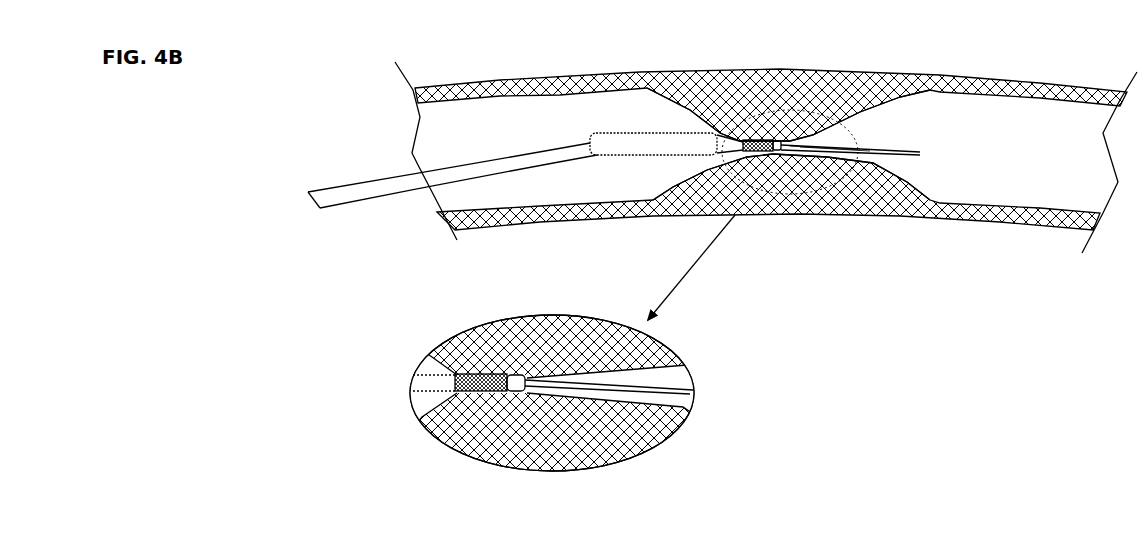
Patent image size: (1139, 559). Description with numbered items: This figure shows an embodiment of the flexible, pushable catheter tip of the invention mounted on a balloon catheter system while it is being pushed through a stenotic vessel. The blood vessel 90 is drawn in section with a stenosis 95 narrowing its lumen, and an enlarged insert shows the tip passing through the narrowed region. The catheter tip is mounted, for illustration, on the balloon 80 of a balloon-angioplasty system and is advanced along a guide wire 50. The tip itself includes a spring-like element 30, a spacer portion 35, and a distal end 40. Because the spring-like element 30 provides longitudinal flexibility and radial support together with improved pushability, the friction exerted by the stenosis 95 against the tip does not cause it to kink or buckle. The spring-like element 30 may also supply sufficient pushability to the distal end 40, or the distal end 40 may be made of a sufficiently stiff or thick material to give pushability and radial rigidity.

The spring-like element 30 is at (760, 95).
The spacer portion 35 is at (726, 100).
The distal end 40 is at (798, 207).
The guide wire 50 is at (890, 175).
The balloon 80 is at (642, 142).
The blood vessel 90 is at (1035, 78).
The stenosis 95 is at (848, 70).